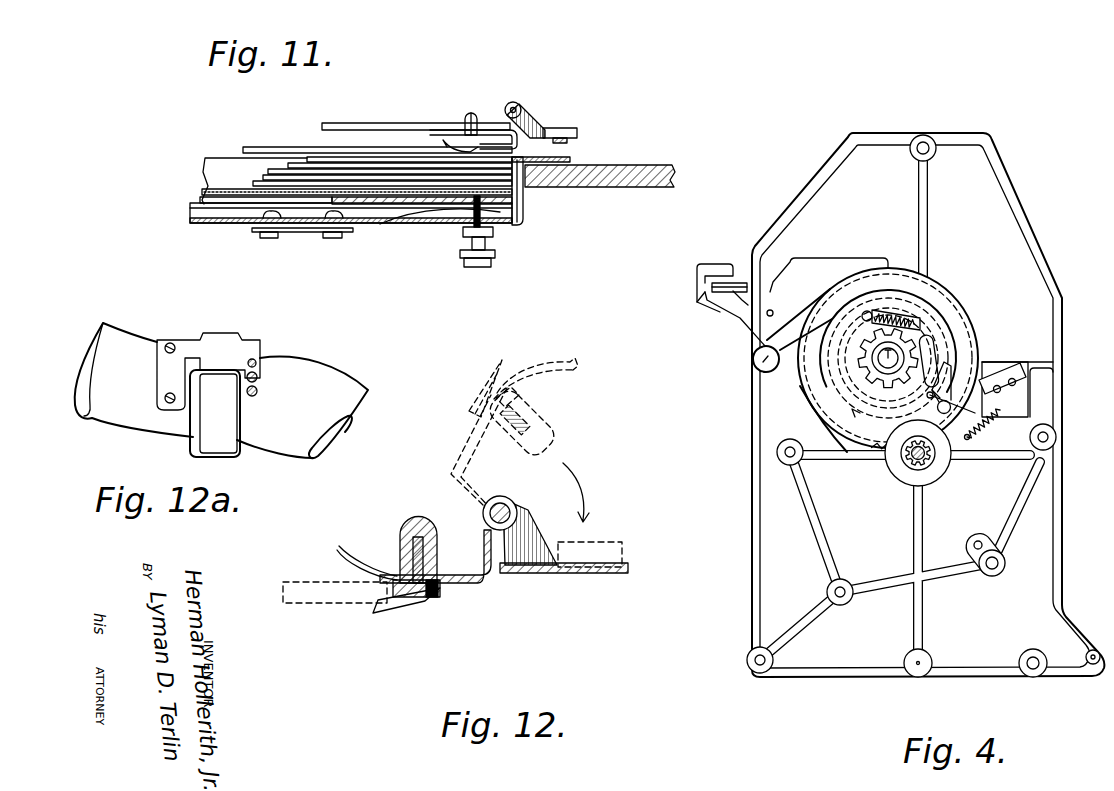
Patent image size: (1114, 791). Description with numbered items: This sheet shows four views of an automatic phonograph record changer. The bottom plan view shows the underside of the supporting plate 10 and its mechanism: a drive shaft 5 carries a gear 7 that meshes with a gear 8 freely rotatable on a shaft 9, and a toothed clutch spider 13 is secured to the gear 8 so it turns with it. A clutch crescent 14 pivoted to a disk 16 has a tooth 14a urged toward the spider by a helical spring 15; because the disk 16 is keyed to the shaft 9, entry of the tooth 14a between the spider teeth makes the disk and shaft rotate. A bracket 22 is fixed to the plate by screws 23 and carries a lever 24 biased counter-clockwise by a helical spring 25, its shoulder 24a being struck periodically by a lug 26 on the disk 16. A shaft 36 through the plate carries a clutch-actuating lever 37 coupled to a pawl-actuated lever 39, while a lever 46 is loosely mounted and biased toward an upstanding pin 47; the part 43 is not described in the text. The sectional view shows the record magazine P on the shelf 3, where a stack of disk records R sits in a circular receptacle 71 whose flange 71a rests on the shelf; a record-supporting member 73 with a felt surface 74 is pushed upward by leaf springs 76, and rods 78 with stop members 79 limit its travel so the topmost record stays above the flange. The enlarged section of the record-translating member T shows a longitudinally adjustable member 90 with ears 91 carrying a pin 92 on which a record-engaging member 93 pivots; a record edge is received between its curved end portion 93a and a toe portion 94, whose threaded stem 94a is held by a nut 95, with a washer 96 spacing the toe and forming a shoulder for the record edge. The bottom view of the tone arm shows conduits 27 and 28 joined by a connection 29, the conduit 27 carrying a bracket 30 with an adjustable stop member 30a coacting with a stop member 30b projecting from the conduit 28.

In FIG. 11, the shelf or ledge 3 is at (633, 187).
In FIG. 4, the drive shaft 5 is at (910, 460).
In FIG. 4, the gear 7 is at (930, 463).
In FIG. 4, the gear 8 is at (936, 300).
In FIG. 4, the shaft 9 is at (878, 362).
In FIG. 4, the plate 10 is at (1063, 521).
In FIG. 4, the clutch wheel or spider 13 is at (940, 336).
In FIG. 4, the clutch crescent 14 is at (838, 447).
In FIG. 4, the tooth 14a is at (845, 372).
In FIG. 4, the helical spring 15 is at (905, 300).
In FIG. 4, the disk 16 is at (890, 310).
In FIG. 4, the bracket 22 is at (1012, 372).
In FIG. 4, the screws 23 is at (1030, 376).
In FIG. 4, the lever 24 is at (950, 380).
In FIG. 4, the shoulder 24a is at (955, 385).
In FIG. 4, the helical spring 25 is at (975, 442).
In FIG. 4, the lug or member 26 is at (880, 452).
In FIG. 12A, the conduit 27 is at (121, 337).
In FIG. 12A, the conduit 28 is at (322, 374).
In FIG. 12A, the connection 29 is at (234, 441).
In FIG. 12A, the bracket 30 is at (220, 345).
In FIG. 12A, the stop member 30a is at (258, 360).
In FIG. 12A, the stop member 30b is at (258, 391).
In FIG. 4, the member or shaft 36 is at (758, 366).
In FIG. 4, the clutch-actuating lever 37 is at (800, 300).
In FIG. 4, the pawl-actuated lever 39 is at (730, 312).
In FIG. 4, the pin 43 is at (740, 283).
In FIG. 4, the lever 46 is at (697, 296).
In FIG. 4, the pin or member 47 is at (771, 309).
In FIG. 11, the receptacle or well 71 is at (524, 216).
In FIG. 11, the flanged portion 71a is at (572, 159).
In FIG. 11, the record-supporting member 73 is at (385, 205).
In FIG. 11, the felt surface 74 is at (218, 158).
In FIG. 11, the leaf springs 76 is at (420, 217).
In FIG. 11, the rods or members 78 is at (462, 246).
In FIG. 11, the stop member 79 is at (332, 238).
In FIG. 11, the member 90 is at (578, 131).
In FIG. 12, the member 90 is at (568, 575).
In FIG. 11, the ears 91 is at (540, 121).
In FIG. 12, the ears 91 is at (533, 531).
In FIG. 11, the pin 92 is at (522, 107).
In FIG. 12, the pin 92 is at (509, 498).
In FIG. 11, the record-engaging member 93 is at (501, 129).
In FIG. 12, the record-engaging member 93 is at (482, 585).
In FIG. 11, the curved end portion 93a is at (448, 140).
In FIG. 12, the curved end portion 93a is at (336, 551).
In FIG. 12, the toe portion 94 is at (396, 614).
In FIG. 12, the threaded stem 94a is at (413, 556).
In FIG. 11, the nut 95 is at (470, 113).
In FIG. 12, the nut 95 is at (418, 517).
In FIG. 12, the washer 96 is at (440, 592).
In FIG. 11, the record magazine P is at (232, 217).
In FIG. 11, the disk records R is at (270, 147).
In FIG. 12, the disk records R is at (318, 604).
In FIG. 11, the record-translating member T is at (384, 124).
In FIG. 12, the record-translating member T is at (615, 542).